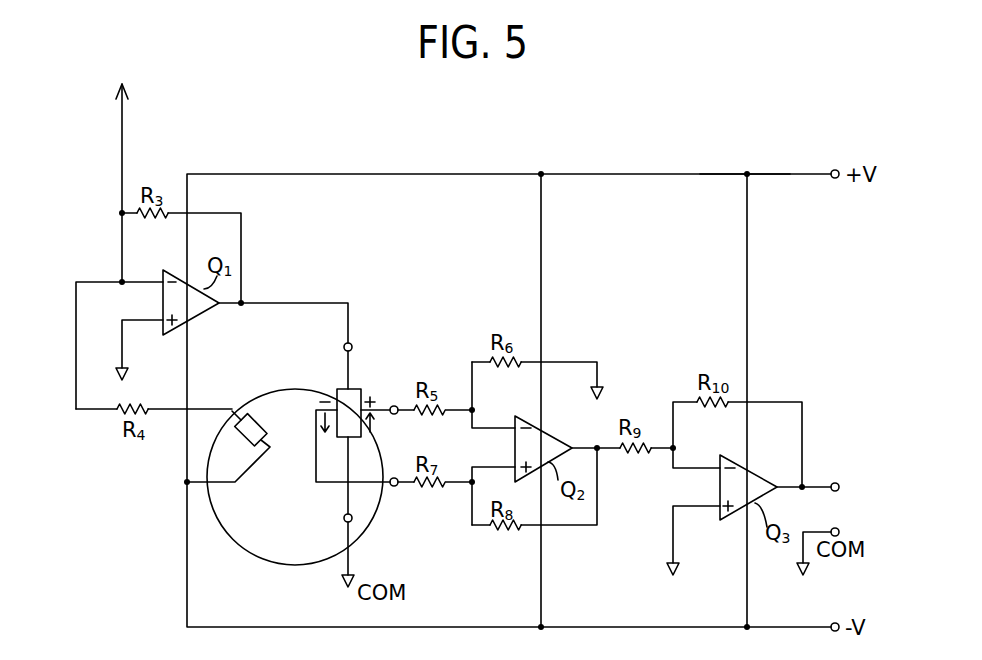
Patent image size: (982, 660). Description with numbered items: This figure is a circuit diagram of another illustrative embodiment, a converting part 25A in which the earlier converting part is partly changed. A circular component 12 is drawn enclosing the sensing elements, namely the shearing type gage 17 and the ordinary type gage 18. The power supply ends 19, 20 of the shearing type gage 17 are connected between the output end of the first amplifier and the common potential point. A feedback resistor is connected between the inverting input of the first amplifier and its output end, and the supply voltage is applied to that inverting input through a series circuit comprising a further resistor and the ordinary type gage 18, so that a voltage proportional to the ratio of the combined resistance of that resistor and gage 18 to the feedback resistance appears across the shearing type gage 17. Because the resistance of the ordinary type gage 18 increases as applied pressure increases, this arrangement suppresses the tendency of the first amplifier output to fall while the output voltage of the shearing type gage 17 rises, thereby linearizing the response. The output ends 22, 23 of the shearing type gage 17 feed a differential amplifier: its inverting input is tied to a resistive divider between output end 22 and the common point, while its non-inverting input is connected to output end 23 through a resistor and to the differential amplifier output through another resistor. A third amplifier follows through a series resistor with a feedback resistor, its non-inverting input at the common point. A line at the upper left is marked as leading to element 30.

The sensor housing 12 is at (262, 543).
The shearing type gage 17 is at (355, 388).
The ordinary type gage 18 is at (248, 413).
The power supply end 19 is at (352, 345).
The power supply end 20 is at (352, 521).
The output end 22 is at (397, 414).
The output end 23 is at (398, 486).
The converting part 25A is at (767, 162).
The controller 30 is at (122, 171).